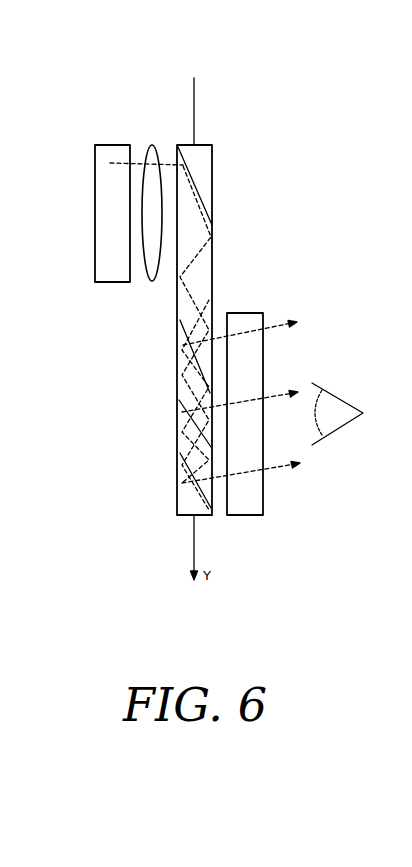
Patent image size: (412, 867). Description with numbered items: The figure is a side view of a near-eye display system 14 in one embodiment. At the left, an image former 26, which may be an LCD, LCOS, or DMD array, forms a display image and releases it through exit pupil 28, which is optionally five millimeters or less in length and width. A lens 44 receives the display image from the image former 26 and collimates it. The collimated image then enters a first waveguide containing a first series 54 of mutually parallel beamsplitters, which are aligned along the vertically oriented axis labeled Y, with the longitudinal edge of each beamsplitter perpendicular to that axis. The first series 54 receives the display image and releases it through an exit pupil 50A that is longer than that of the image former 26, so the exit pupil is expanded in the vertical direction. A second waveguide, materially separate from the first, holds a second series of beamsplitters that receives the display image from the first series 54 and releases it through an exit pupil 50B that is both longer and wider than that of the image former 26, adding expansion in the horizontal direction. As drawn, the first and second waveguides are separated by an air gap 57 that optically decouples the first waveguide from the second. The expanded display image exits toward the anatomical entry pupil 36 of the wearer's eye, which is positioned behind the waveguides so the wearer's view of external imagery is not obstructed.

The image former 26 is at (110, 145).
The lens 44 is at (151, 146).
The exit pupil 28 is at (128, 200).
The near-eye display system 14 is at (311, 148).
The air gap 57 is at (219, 313).
The first series of beamsplitters 54 is at (178, 414).
The exit pupil of the first series of beamsplitters 50A is at (171, 313).
The exit pupil of the second series of beamsplitters 50B is at (264, 485).
The anatomical entry pupil 36 is at (344, 423).